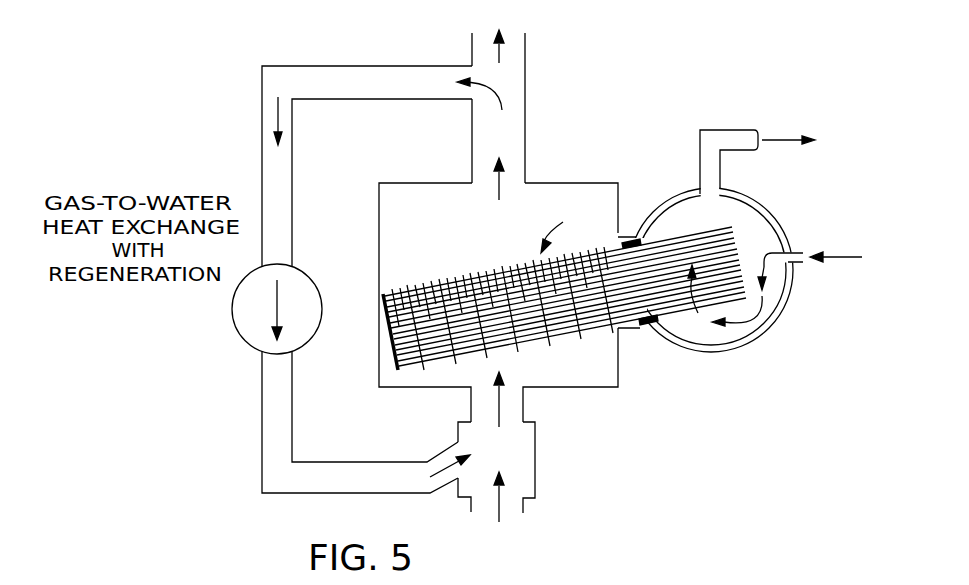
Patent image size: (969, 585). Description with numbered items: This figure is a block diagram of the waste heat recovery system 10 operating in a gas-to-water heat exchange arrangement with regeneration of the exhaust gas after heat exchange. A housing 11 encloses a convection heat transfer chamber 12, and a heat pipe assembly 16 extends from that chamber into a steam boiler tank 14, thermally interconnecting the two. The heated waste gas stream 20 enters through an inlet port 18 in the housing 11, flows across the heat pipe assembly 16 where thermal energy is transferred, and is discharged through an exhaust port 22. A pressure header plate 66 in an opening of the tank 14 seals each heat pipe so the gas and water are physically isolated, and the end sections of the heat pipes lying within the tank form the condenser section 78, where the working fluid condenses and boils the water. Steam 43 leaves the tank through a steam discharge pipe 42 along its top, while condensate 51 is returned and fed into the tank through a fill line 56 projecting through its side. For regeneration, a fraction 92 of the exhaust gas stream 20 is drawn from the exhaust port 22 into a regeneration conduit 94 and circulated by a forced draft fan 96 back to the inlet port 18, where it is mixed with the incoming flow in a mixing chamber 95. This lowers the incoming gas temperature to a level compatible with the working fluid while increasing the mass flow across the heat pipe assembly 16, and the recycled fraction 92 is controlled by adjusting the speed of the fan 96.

The heat recovery system 10 is at (636, 109).
The housing 11 is at (412, 183).
The convection heat transfer chamber 12 is at (585, 193).
The steam boiler tank 14 is at (792, 290).
The heat pipe assembly 16 is at (563, 225).
The inlet port 18 is at (523, 398).
The heated waste gas stream 20 is at (500, 40).
The exhaust port 22 is at (525, 77).
The steam discharge pipe 42 is at (745, 130).
The steam 43 is at (795, 140).
The condensate 51 is at (845, 259).
The fill line 56 is at (799, 250).
The pressure header plate 66 is at (658, 318).
The condenser section 78 is at (677, 228).
The fraction of exhaust waste gas stream 92 is at (278, 107).
The regeneration conduit 94 is at (355, 67).
The mixing chamber 95 is at (535, 455).
The forced draft fan 96 is at (308, 277).